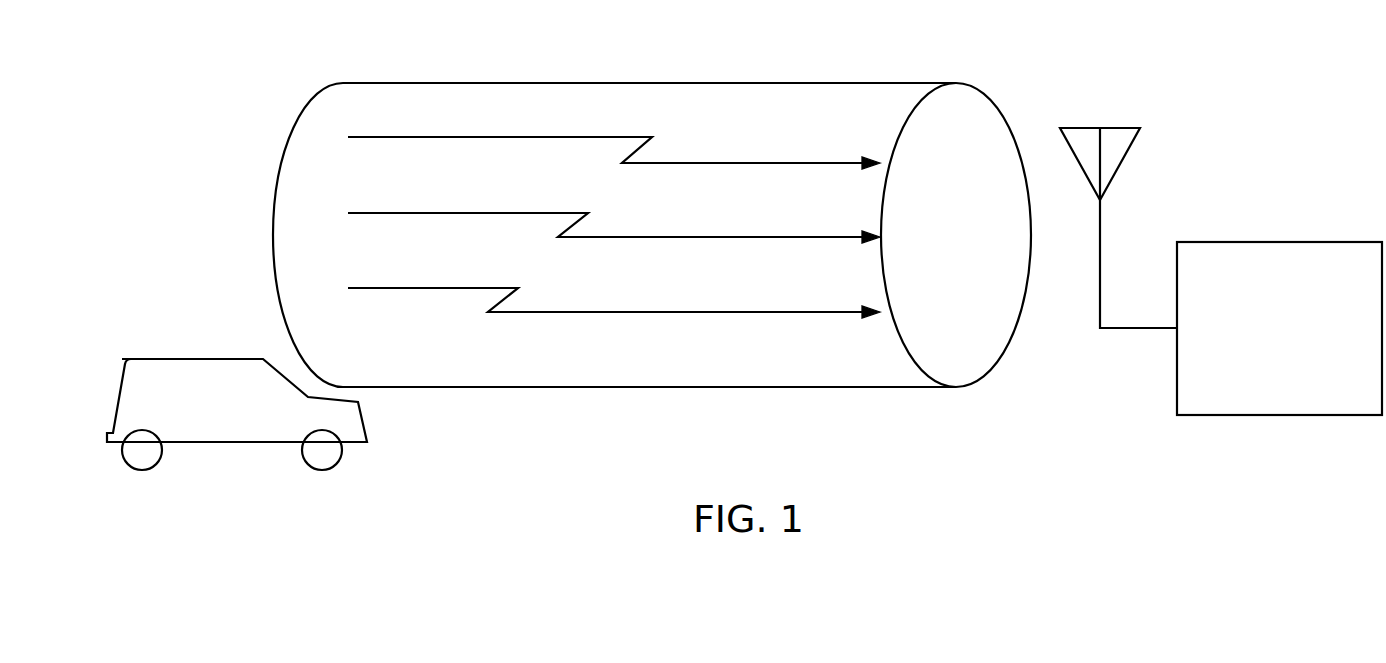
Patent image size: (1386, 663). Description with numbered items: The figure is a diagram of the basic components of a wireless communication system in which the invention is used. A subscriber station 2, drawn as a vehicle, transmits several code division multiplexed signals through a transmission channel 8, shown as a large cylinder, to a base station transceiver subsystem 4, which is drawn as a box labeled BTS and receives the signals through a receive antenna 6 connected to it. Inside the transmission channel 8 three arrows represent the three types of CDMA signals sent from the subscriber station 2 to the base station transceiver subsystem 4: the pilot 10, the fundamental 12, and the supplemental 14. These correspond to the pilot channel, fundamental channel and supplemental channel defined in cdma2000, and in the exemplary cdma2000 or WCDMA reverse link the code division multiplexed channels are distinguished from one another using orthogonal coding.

The subscriber station 2 is at (180, 359).
The base station transceiver subsystem 4 is at (1333, 242).
The receive antenna 6 is at (1113, 128).
The transmission channel 8 is at (563, 83).
The pilot 10 is at (723, 163).
The fundamental 12 is at (718, 237).
The supplemental 14 is at (713, 312).